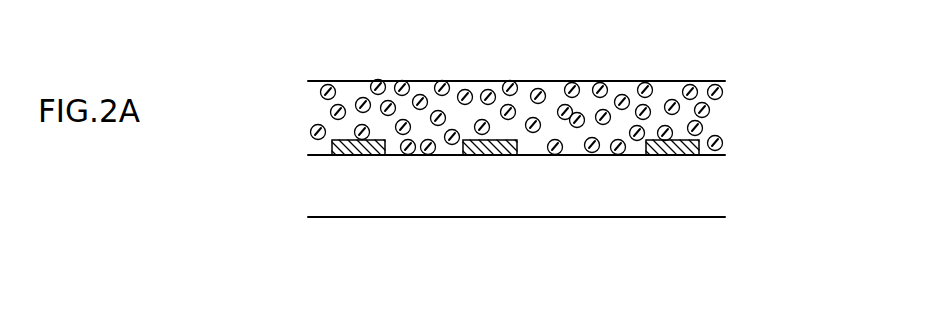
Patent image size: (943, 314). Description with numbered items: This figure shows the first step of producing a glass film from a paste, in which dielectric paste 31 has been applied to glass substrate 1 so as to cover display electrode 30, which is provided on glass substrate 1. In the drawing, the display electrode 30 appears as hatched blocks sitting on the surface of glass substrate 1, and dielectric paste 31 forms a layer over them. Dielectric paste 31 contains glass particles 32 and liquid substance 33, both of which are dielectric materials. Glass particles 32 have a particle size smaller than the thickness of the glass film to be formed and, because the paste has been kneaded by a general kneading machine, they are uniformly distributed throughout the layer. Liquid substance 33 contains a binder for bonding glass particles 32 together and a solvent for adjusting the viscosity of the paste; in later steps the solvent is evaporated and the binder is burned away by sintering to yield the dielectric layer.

The glass substrate 1 is at (673, 203).
The display electrode 30 is at (332, 157).
The dielectric paste 31 is at (718, 122).
The glass particles 32 is at (598, 84).
The liquid substance 33 is at (348, 87).